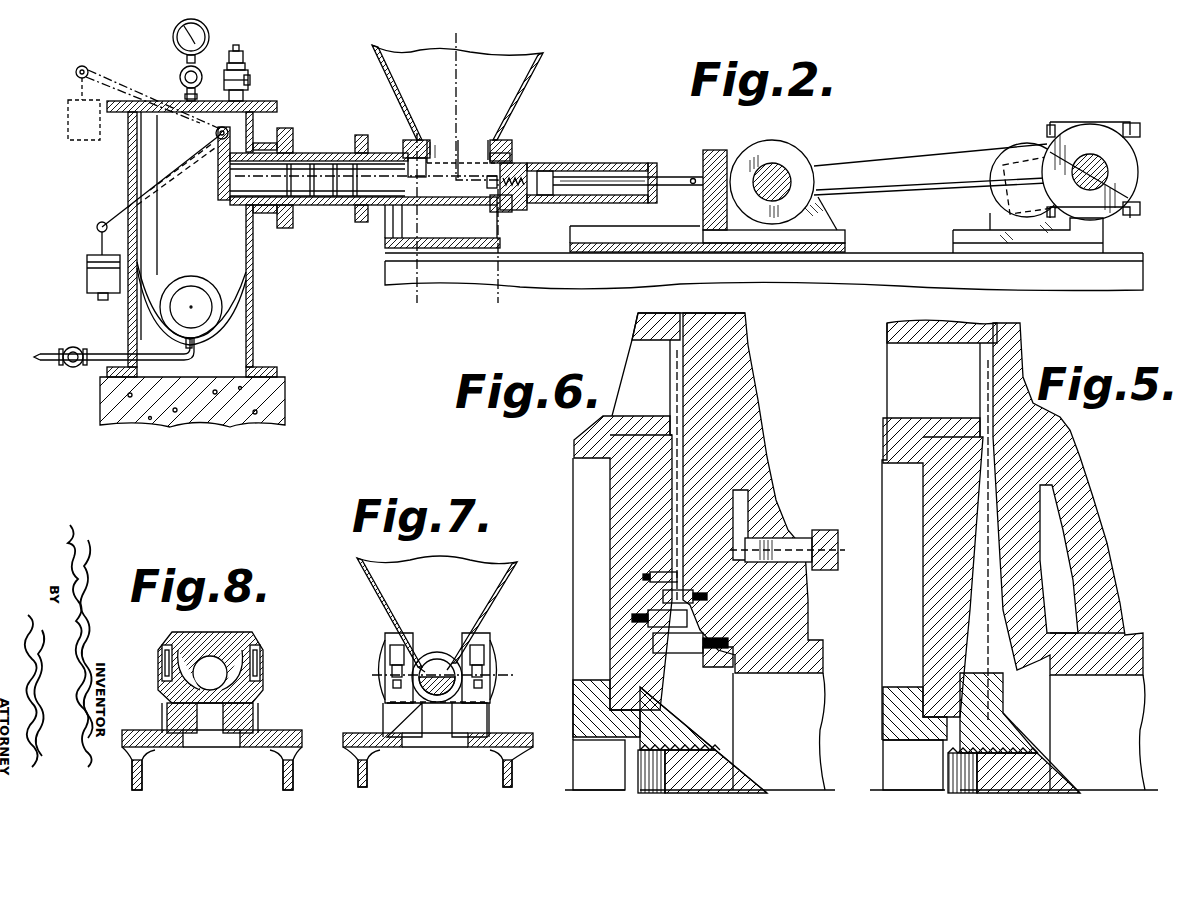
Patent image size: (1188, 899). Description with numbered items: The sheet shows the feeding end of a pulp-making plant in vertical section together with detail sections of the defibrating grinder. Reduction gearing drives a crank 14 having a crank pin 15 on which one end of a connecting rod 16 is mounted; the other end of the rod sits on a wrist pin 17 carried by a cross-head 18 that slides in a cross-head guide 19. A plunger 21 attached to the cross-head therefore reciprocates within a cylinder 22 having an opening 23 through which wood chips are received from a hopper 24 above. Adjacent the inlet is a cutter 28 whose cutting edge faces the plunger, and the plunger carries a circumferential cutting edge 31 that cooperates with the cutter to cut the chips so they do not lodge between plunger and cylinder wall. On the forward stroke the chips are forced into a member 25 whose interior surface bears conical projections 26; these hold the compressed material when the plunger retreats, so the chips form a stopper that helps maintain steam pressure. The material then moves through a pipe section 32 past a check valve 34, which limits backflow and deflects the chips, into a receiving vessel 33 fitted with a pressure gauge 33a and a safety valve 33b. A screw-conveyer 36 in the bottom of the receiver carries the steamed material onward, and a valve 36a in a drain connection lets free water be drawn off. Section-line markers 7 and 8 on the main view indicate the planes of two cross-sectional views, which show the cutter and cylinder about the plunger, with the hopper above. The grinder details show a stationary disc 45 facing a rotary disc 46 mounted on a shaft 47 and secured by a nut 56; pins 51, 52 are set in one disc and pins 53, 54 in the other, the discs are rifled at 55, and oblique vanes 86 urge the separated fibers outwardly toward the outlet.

In FIG. 2, the section line 7- 7 is at (470, 33).
In FIG. 2, the section line 8- 8 is at (424, 133).
In FIG. 2, the crank 14 is at (1005, 208).
In FIG. 2, the crank pin 15 is at (1135, 180).
In FIG. 2, the connecting rod 16 is at (886, 170).
In FIG. 2, the wrist pin 17 is at (775, 170).
In FIG. 2, the cross-head 18 is at (832, 226).
In FIG. 2, the cross-head guide 19 is at (797, 246).
In FIG. 2, the plunger 21 is at (590, 163).
In FIG. 7, the plunger 21 is at (440, 690).
In FIG. 2, the cylinder 22 is at (380, 210).
In FIG. 7, the cylinder 22 is at (438, 745).
In FIG. 8, the cylinder 22 is at (240, 680).
In FIG. 2, the opening 23 is at (478, 152).
In FIG. 7, the opening 23 is at (422, 650).
In FIG. 2, the hopper 24 is at (532, 70).
In FIG. 7, the hopper 24 is at (495, 598).
In FIG. 2, the member 25 is at (330, 206).
In FIG. 2, the projections 26 is at (300, 158).
In FIG. 2, the cutter 28 is at (420, 178).
In FIG. 7, the cutter 28 is at (445, 660).
In FIG. 8, the cutter 28 is at (210, 656).
In FIG. 2, the circumferential cutting edge 31 is at (492, 165).
In FIG. 2, the pipe section 32 is at (240, 205).
In FIG. 2, the receiving vessel 33 is at (253, 253).
In FIG. 2, the pressure gauge 33a is at (173, 38).
In FIG. 2, the safety valve 33b is at (246, 62).
In FIG. 2, the check valve 34 is at (218, 186).
In FIG. 2, the screw-conveyer 36 is at (206, 285).
In FIG. 2, the valve 36a is at (76, 368).
In FIG. 6, the stationary disc 45 is at (712, 478).
In FIG. 5, the stationary disc 45 is at (1030, 488).
In FIG. 6, the rotary disc 46 is at (622, 498).
In FIG. 5, the rotary disc 46 is at (922, 513).
In FIG. 6, the shaft 47 is at (606, 735).
In FIG. 5, the shaft 47 is at (915, 738).
In FIG. 6, the pin 51 is at (660, 592).
In FIG. 6, the pin 52 is at (665, 648).
In FIG. 6, the pin 53 is at (660, 614).
In FIG. 6, the pin 54 is at (665, 560).
In FIG. 6, the rifling 55 is at (674, 440).
In FIG. 5, the rifling 55 is at (986, 440).
In FIG. 6, the nut 56 is at (690, 730).
In FIG. 5, the nut 56 is at (1002, 752).
In FIG. 6, the oblique vanes 86 is at (634, 350).
In FIG. 5, the oblique vanes 86 is at (895, 356).